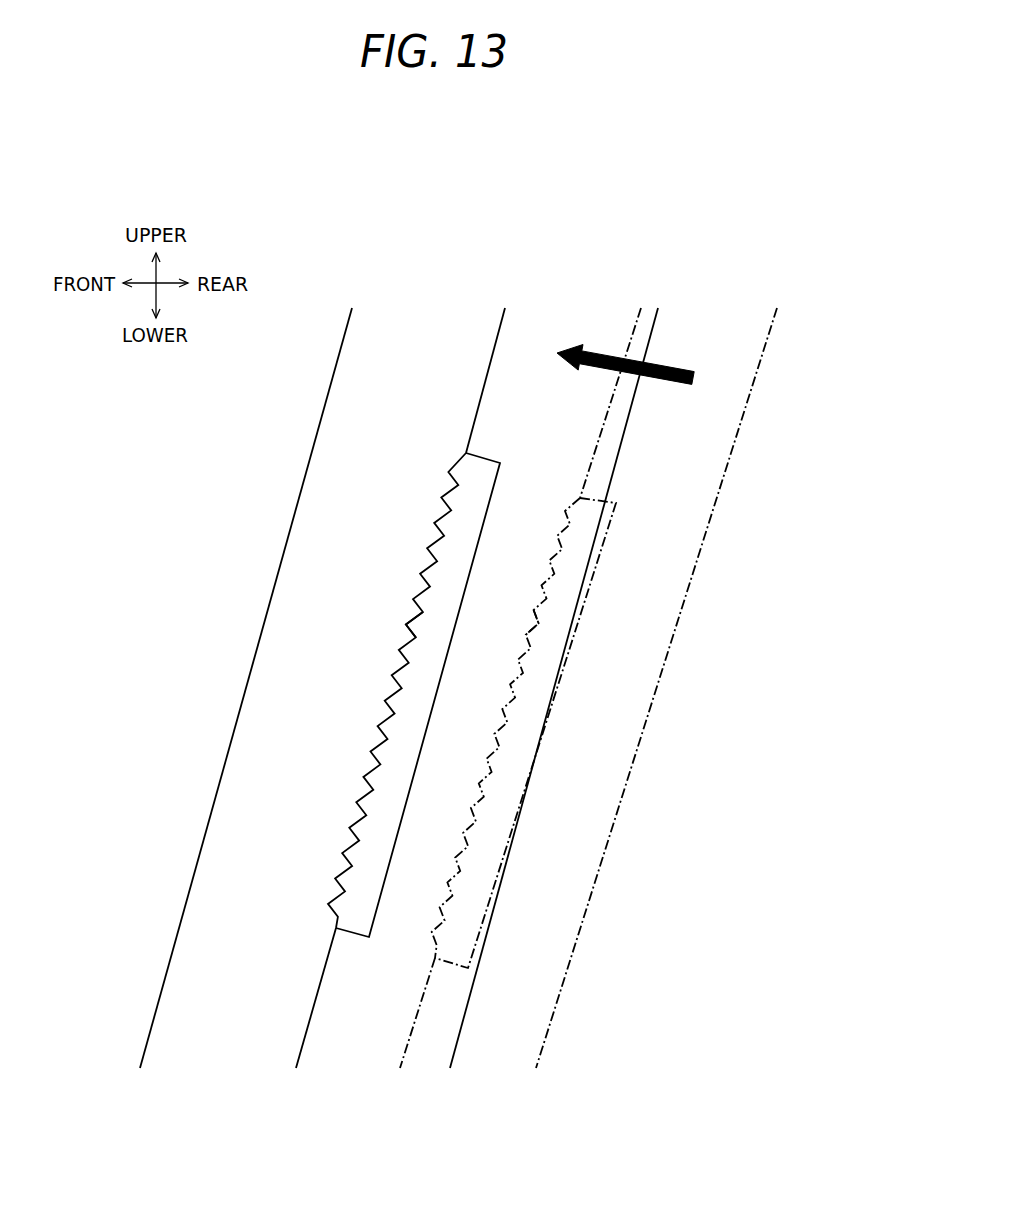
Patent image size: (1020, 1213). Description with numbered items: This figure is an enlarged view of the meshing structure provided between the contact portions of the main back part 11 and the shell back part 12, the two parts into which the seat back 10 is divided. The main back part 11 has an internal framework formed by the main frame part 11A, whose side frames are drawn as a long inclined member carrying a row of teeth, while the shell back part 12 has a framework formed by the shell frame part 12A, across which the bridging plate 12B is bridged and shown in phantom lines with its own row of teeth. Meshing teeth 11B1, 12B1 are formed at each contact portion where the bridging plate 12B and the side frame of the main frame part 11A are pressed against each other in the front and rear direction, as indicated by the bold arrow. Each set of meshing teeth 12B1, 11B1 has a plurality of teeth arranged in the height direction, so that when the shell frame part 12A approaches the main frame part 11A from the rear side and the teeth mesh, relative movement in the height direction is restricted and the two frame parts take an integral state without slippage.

The seat back 10 is at (193, 495).
The main back part 11 is at (377, 397).
The main frame part 11A is at (315, 652).
The meshing teeth 11B1 is at (414, 624).
The shell back part 12 is at (560, 432).
The shell frame part 12A is at (540, 463).
The bridging plate 12B is at (455, 555).
The meshing teeth 12B1 is at (412, 623).